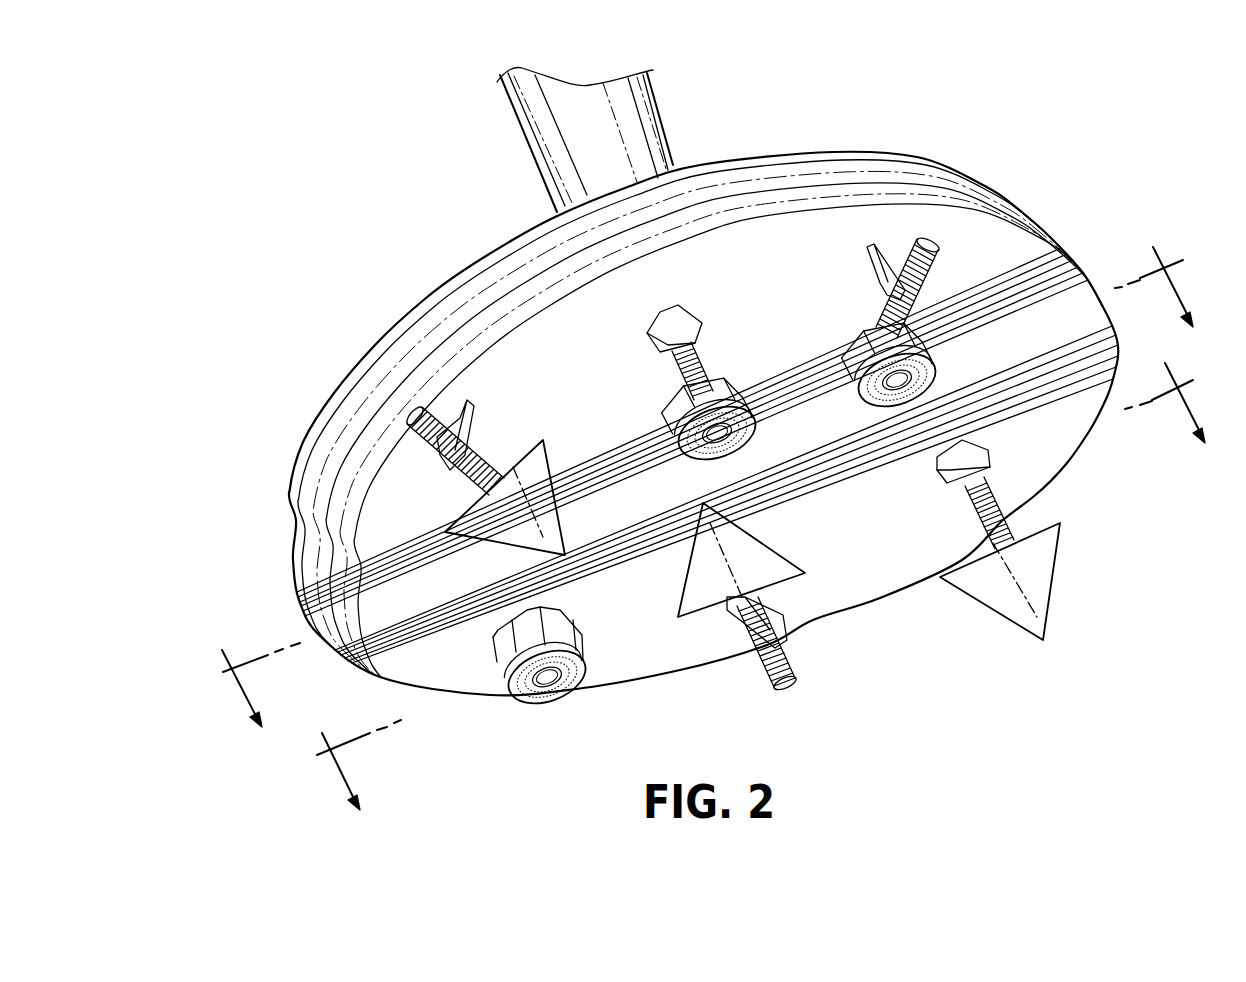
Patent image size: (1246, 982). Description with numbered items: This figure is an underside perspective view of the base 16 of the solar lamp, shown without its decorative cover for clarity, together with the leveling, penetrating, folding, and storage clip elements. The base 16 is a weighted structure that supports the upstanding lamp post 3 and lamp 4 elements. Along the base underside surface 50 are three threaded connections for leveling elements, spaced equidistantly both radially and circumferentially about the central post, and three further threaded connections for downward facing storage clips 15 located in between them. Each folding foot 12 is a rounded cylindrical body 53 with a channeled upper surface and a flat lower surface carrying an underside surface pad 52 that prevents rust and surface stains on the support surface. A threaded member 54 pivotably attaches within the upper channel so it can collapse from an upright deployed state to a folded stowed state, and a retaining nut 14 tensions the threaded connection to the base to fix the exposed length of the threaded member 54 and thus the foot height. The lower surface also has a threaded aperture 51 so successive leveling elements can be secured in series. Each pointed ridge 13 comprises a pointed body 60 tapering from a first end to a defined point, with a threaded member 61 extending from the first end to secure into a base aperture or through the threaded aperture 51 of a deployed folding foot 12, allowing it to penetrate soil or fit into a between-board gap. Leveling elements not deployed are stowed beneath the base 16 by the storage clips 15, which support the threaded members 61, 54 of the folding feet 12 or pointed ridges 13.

The folding foot 12 is at (696, 498).
The pointed ridge 13 is at (553, 408).
The retaining nut 14 is at (576, 663).
The storage clip 15 is at (470, 422).
The base 16 is at (333, 505).
The base underside surface 50 is at (650, 513).
The threaded aperture 51 is at (537, 697).
The underside surface pad 52 is at (587, 683).
The body 53 is at (562, 637).
The threaded member 54 is at (930, 308).
The pointed body 60 is at (473, 533).
The threaded member 61 is at (460, 480).
The section line 3- 3 is at (701, 482).
The section line 4- 4 is at (755, 582).